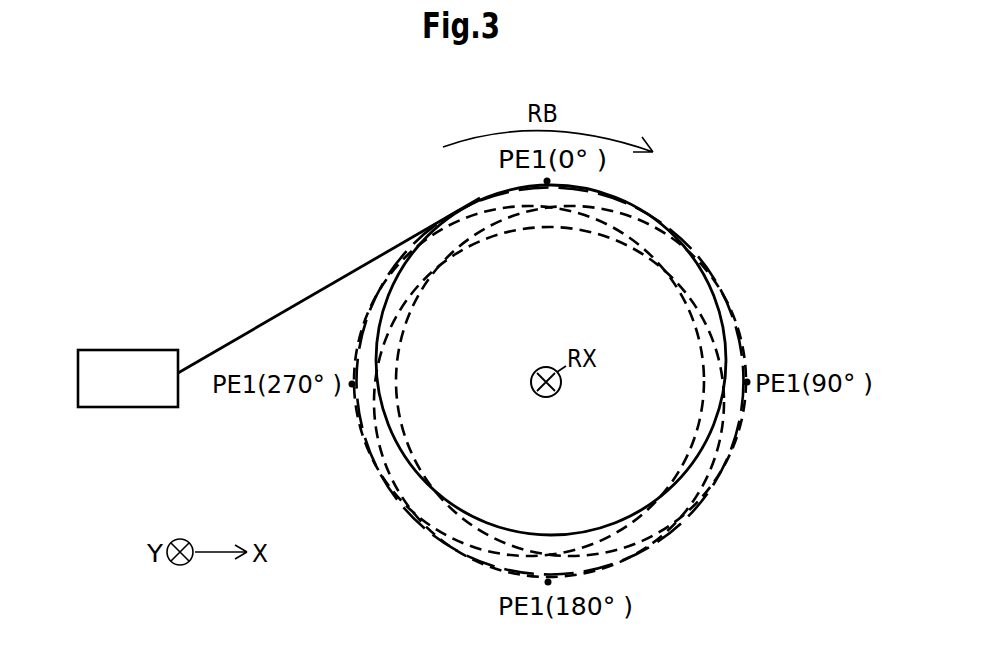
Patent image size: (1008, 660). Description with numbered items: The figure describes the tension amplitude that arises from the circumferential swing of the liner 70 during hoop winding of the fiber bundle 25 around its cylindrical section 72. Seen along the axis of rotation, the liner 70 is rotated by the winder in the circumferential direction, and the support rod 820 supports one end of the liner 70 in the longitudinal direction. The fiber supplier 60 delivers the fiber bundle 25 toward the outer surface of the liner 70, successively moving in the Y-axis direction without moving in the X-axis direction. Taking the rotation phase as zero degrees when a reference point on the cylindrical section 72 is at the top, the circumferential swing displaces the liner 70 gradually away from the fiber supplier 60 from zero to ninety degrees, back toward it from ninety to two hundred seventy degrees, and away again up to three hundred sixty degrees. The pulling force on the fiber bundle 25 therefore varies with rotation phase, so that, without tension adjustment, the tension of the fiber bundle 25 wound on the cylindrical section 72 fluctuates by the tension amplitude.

The fiber bundle 25 is at (306, 298).
The fiber supplier 60 is at (136, 408).
The liner 70 is at (772, 178).
The cylindrical section 72 is at (637, 212).
The support rod 820 is at (561, 383).